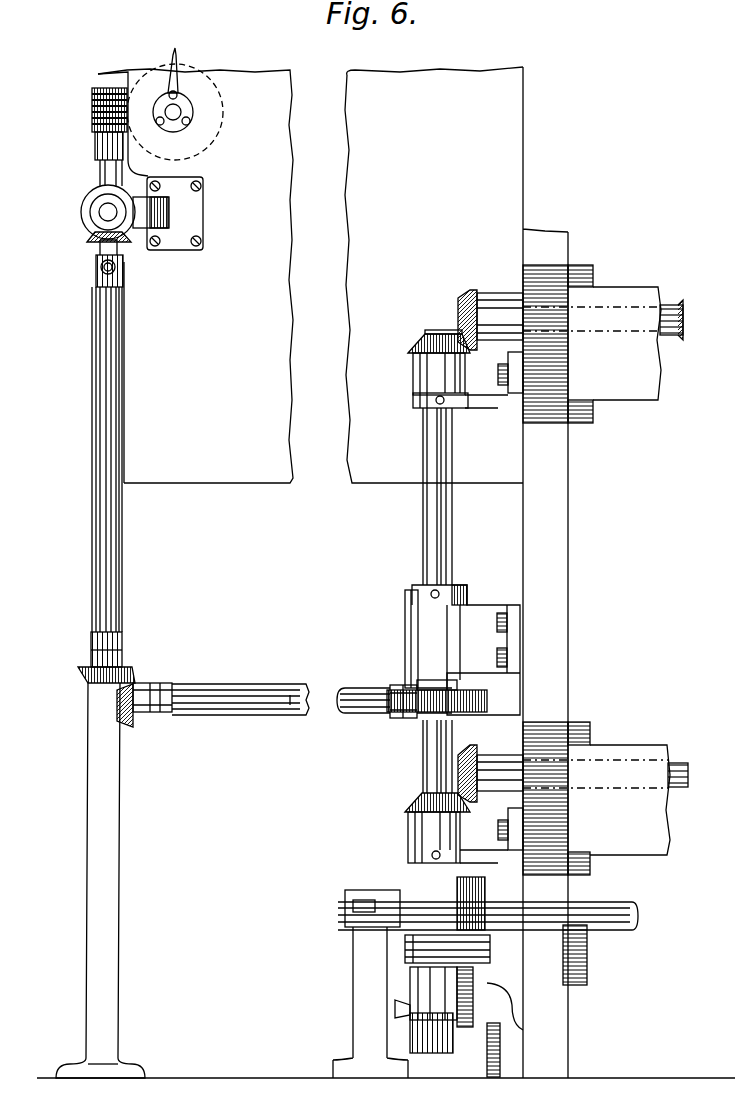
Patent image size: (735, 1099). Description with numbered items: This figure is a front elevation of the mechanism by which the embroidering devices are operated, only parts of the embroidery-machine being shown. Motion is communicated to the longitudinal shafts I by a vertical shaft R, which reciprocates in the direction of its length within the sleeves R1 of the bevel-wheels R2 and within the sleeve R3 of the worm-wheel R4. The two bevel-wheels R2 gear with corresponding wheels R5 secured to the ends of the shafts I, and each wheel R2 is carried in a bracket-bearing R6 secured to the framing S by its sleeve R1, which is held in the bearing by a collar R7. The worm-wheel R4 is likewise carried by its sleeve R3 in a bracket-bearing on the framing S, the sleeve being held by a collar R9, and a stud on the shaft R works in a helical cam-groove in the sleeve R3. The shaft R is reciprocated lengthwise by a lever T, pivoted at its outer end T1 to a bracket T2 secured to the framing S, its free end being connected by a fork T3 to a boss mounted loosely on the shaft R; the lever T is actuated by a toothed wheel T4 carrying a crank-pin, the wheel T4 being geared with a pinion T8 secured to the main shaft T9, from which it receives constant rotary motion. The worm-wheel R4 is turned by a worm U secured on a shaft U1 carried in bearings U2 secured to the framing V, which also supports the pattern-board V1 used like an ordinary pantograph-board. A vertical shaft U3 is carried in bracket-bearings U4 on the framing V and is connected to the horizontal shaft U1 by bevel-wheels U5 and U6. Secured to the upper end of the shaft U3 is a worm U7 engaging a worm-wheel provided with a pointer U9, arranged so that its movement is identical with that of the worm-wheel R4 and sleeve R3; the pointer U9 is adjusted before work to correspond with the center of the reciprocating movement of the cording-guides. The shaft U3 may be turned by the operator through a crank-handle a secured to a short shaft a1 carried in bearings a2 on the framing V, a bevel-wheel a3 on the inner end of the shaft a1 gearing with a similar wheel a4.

The pattern-board V1 is at (310, 275).
The framing S is at (545, 572).
The pointer U9 is at (178, 58).
The worm U7 is at (92, 104).
The bracket-bearings U4 is at (95, 150).
The bevel-wheel a3 is at (95, 199).
The short shaft a1 is at (100, 212).
The bearings a2 is at (168, 213).
The bevel-wheel a4 is at (89, 241).
The crank-handle a is at (118, 258).
The vertical shaft U3 is at (92, 445).
The bevel-wheel U6 is at (80, 675).
The bevel-wheel U5 is at (133, 712).
The bearings U2 is at (160, 690).
The shaft U1 is at (262, 710).
The worm U is at (420, 718).
The framing V is at (100, 880).
The bevel-wheels R5 is at (467, 290).
The bevel-wheels R2 is at (420, 346).
The sleeve R1 is at (420, 410).
The bracket-bearing R6 is at (495, 601).
The collar R7 is at (468, 400).
The vertical shaft R is at (446, 600).
The sleeve R3 is at (470, 578).
The collar R9 is at (408, 596).
The worm-wheel R4 is at (403, 688).
The longitudinal shafts I is at (683, 765).
The pinion T8 is at (483, 896).
The main shaft T9 is at (499, 984).
The outer end of lever T1 is at (447, 948).
The lever T is at (433, 993).
The bracket T2 is at (475, 997).
The fork T3 is at (412, 1026).
The toothed wheel T4 is at (487, 1050).